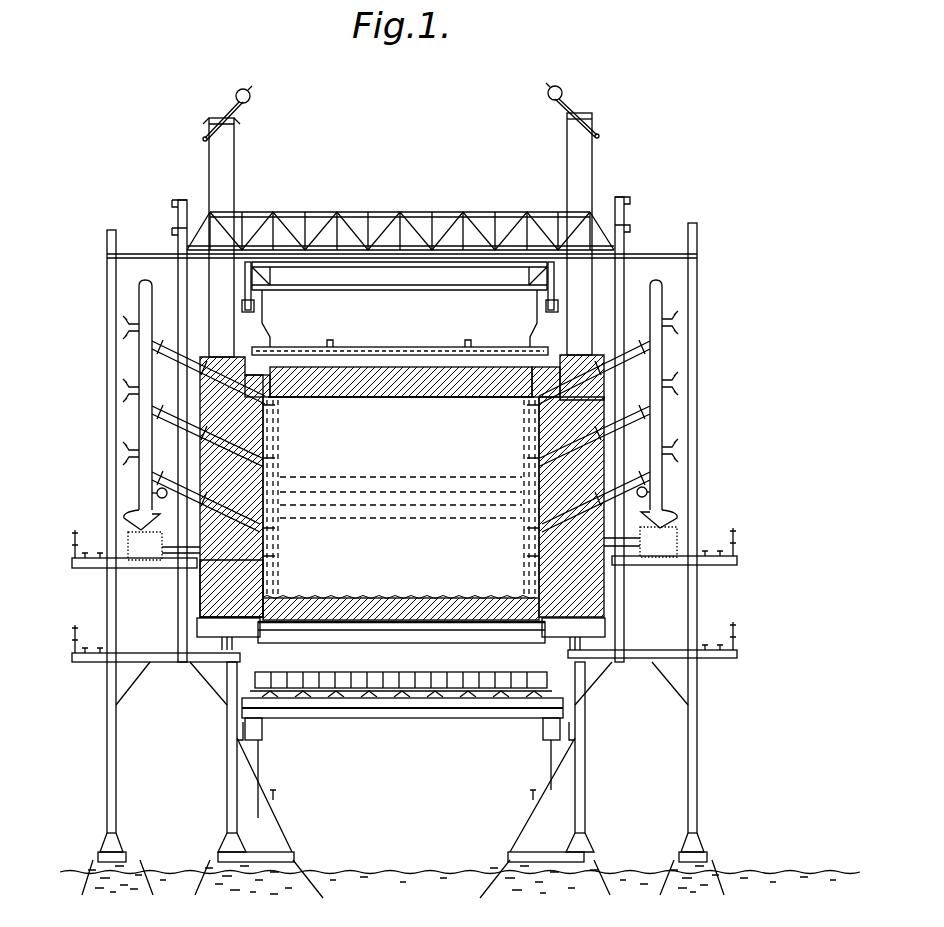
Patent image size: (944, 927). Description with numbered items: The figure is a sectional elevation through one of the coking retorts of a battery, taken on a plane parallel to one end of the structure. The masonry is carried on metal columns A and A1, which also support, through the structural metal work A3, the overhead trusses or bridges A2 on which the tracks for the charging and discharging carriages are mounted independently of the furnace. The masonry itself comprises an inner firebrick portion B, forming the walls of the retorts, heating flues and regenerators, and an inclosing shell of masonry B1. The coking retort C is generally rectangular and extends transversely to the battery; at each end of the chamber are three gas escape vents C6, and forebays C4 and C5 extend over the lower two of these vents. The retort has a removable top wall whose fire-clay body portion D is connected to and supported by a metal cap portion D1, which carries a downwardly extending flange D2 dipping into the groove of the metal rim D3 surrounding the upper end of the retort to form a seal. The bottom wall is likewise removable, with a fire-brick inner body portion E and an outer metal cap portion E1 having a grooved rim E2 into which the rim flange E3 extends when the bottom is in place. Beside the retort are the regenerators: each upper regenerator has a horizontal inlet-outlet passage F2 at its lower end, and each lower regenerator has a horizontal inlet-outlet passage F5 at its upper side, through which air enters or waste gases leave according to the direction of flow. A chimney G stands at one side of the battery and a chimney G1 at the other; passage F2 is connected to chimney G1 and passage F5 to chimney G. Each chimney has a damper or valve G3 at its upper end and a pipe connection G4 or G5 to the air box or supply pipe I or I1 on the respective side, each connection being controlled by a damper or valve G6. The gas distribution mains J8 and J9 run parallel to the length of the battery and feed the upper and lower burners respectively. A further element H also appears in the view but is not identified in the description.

The metal column A is at (227, 773).
The metal column A1 is at (118, 757).
The overhead truss or bridge A2 is at (312, 199).
The structural metal work A3 is at (178, 273).
The inner firebrick portion B is at (263, 441).
The inclosing shell of masonry B1 is at (203, 583).
The coking retort C is at (401, 497).
The forebay C4 is at (263, 462).
The forebay C5 is at (263, 530).
The gas escape vent C6 is at (266, 404).
The body portion of top wall D is at (399, 392).
The metal cap portion D1 is at (343, 370).
The downwardly extending flange D2 is at (540, 360).
The metal rim D3 is at (562, 356).
The inner body portion of bottom wall E is at (330, 597).
The outer metal cap portion E1 is at (322, 632).
The grooved rim E2 is at (258, 642).
The rim flange E3 is at (401, 628).
The horizontal inlet-outlet passage F2 is at (428, 480).
The horizontal inlet-outlet passage F5 is at (425, 519).
The chimney or smoke stack G is at (218, 303).
The chimney or smoke stack G1 is at (592, 301).
The damper or valve G3 is at (249, 103).
The pipe connection G4 is at (227, 532).
The pipe connection G5 is at (604, 522).
The damper or valve G6 is at (180, 555).
The supply pipe header with nozzles H is at (145, 428).
The air box or supply pipe I is at (128, 538).
The air box or supply pipe I1 is at (680, 535).
The distribution main J8 is at (157, 493).
The distribution main J9 is at (648, 493).